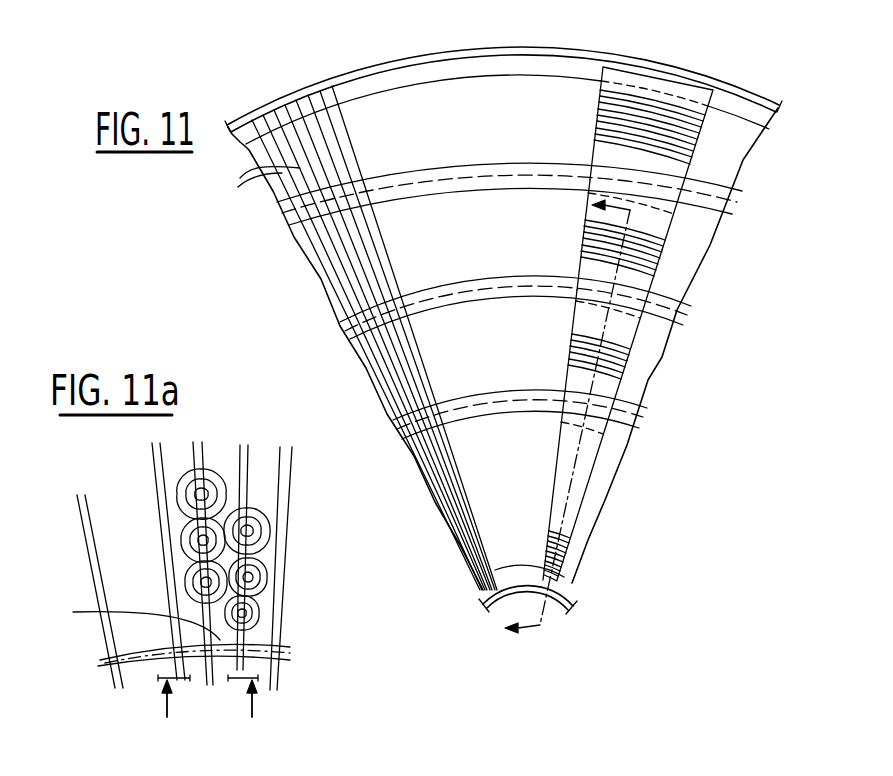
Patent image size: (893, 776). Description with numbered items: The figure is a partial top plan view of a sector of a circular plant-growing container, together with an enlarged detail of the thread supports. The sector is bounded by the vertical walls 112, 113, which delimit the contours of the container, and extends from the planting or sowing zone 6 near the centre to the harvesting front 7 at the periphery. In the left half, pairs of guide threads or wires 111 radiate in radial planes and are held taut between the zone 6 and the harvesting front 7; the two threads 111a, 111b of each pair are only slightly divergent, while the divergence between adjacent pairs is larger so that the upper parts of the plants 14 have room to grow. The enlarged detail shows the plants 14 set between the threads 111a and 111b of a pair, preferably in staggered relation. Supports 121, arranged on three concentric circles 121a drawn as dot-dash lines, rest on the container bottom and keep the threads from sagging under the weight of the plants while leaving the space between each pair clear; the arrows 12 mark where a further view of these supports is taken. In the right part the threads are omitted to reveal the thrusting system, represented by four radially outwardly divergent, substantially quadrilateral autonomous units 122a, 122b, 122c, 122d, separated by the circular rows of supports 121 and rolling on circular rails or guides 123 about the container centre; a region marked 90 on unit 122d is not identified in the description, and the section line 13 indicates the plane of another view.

In FIG. 11, the planting or sowing zone 6 is at (572, 598).
In FIG. 11, the harvesting front 7 is at (578, 42).
In FIG. 11A, the coil insertion slot 12 is at (212, 715).
In FIG. 11, the section line 13 is at (567, 432).
In FIG. 11A, the plants 14 is at (212, 472).
In FIG. 11, the magnet 90 is at (675, 113).
In FIG. 11, the pairs of guide threads or wires 111 is at (351, 338).
In FIG. 11A, the pairs of guide threads or wires 111 is at (297, 468).
In FIG. 11A, the thread or wire of a pair 111a is at (280, 480).
In FIG. 11A, the thread or wire of a pair 111b is at (292, 495).
In FIG. 11, the vertical wall 112 is at (224, 124).
In FIG. 11, the vertical wall 113 is at (486, 598).
In FIG. 11A, the supports 121 is at (262, 640).
In FIG. 11, the concentric circles 121a is at (712, 213).
In FIG. 11A, the concentric circles 121a is at (282, 655).
In FIG. 11, the autonomous unit 122a is at (588, 472).
In FIG. 11, the autonomous unit 122b is at (615, 392).
In FIG. 11, the autonomous unit 122c is at (658, 287).
In FIG. 11, the autonomous unit 122d is at (692, 177).
In FIG. 11, the circular rails or guides 123 is at (742, 107).